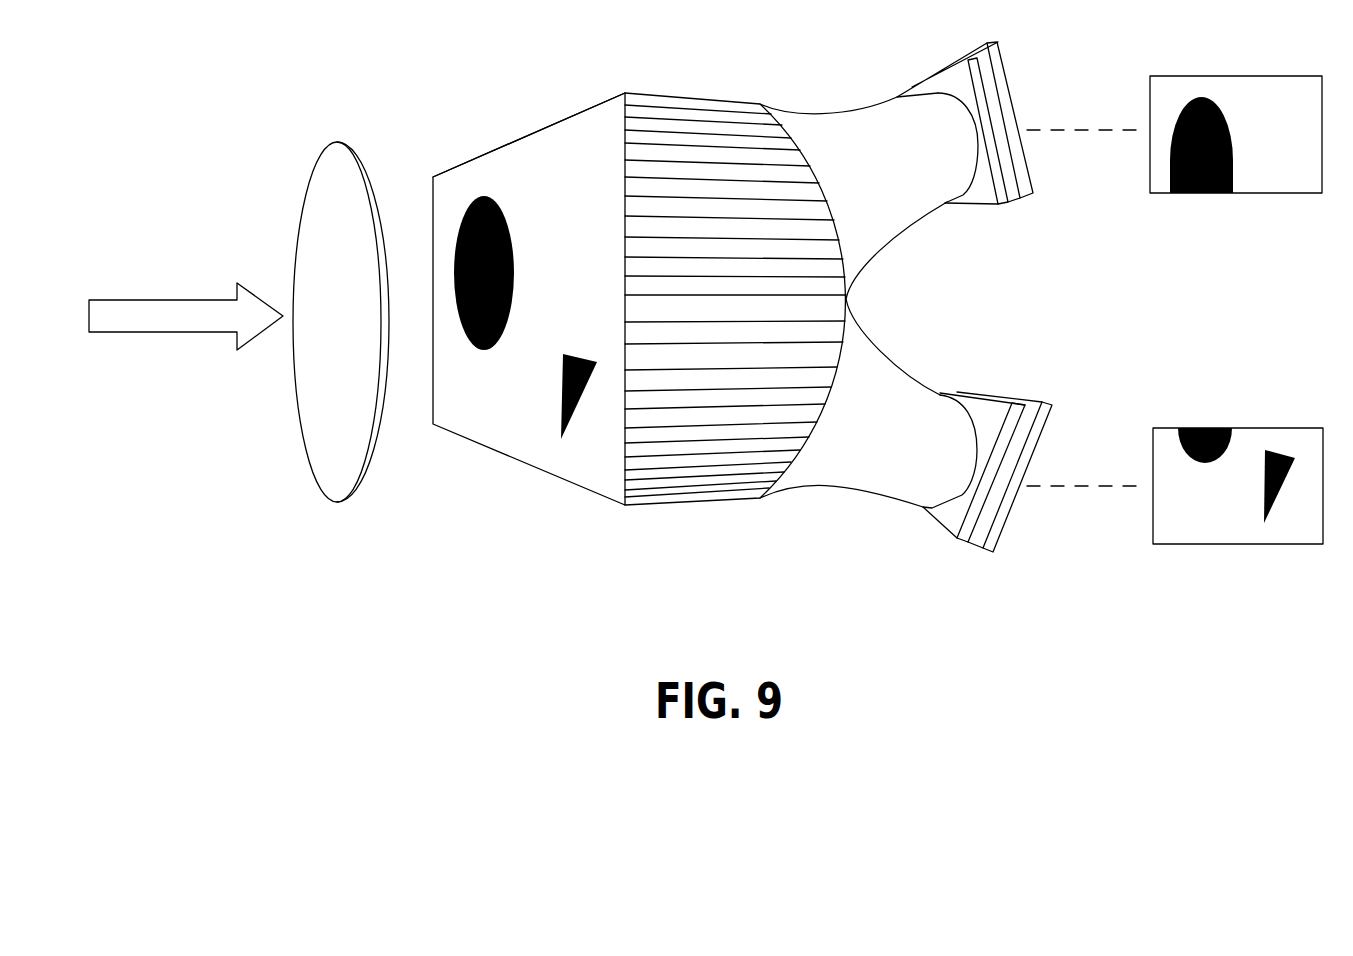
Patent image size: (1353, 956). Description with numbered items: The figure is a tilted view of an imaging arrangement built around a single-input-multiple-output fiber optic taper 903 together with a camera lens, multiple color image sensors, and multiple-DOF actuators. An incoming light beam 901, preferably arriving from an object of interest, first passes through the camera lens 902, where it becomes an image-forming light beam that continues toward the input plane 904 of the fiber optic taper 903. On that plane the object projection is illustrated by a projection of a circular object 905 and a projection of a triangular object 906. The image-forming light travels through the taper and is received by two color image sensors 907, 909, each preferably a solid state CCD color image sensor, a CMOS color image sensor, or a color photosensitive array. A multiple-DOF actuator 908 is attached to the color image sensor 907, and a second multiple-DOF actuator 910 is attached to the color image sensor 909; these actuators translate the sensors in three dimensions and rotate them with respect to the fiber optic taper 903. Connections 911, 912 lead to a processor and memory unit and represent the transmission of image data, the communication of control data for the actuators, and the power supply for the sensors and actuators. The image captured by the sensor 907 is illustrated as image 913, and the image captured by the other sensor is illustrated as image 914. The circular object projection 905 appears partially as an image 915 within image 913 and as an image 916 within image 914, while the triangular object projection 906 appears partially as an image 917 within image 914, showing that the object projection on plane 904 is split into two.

The incoming light beam 901 is at (178, 297).
The camera lens 902 is at (300, 207).
The SIMO fiber optic taper 903 is at (482, 153).
The plane 904 is at (564, 145).
The projection of a circular object 905 is at (501, 218).
The projection of a triangular object 906 is at (559, 413).
The color image sensor 907 is at (988, 207).
The multiple-DOF actuator 908 is at (1033, 197).
The color image sensor 909 is at (932, 518).
The multiple-DOF actuator 910 is at (983, 552).
The connection 911 is at (1078, 128).
The connection 912 is at (1090, 487).
The image 913 is at (1300, 193).
The image 914 is at (1282, 427).
The image 915 is at (1233, 165).
The image 916 is at (1187, 450).
The image 917 is at (1268, 512).